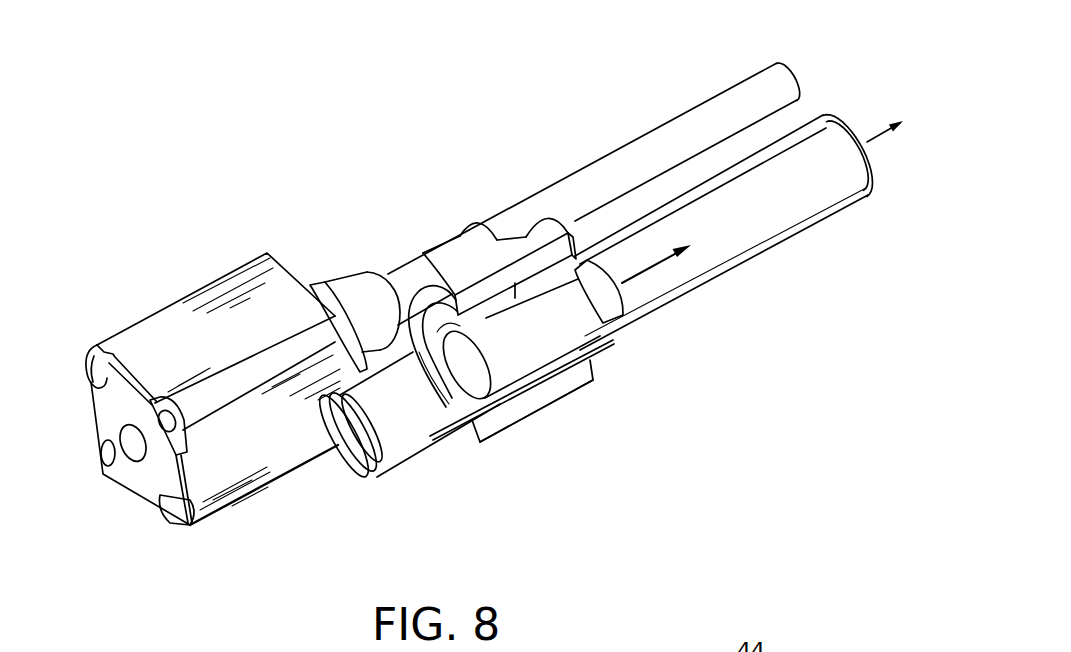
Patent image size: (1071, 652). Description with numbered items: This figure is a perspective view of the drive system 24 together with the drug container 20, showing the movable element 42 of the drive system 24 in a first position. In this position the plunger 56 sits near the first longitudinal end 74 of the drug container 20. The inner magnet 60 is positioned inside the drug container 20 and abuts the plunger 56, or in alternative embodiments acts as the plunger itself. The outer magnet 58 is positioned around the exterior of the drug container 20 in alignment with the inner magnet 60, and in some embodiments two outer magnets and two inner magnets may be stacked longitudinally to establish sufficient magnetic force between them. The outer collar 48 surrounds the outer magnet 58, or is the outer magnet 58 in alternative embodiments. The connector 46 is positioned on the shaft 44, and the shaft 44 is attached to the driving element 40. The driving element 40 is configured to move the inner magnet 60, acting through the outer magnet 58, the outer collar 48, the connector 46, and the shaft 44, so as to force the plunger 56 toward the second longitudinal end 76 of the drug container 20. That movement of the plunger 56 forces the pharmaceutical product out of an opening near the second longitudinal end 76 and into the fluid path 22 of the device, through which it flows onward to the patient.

The drug container 20 is at (757, 258).
The fluid path 22 is at (874, 116).
The drive system 24 is at (336, 252).
The driving element 40 is at (110, 407).
The movable element 42 is at (536, 447).
The shaft 44 is at (758, 98).
The connector 46 is at (457, 248).
The outer collar 48 is at (528, 240).
The plunger 56 is at (608, 300).
The outer magnet 58 is at (497, 405).
The inner magnet 60 is at (518, 348).
The first longitudinal end 74 is at (343, 453).
The second longitudinal end 76 is at (838, 180).